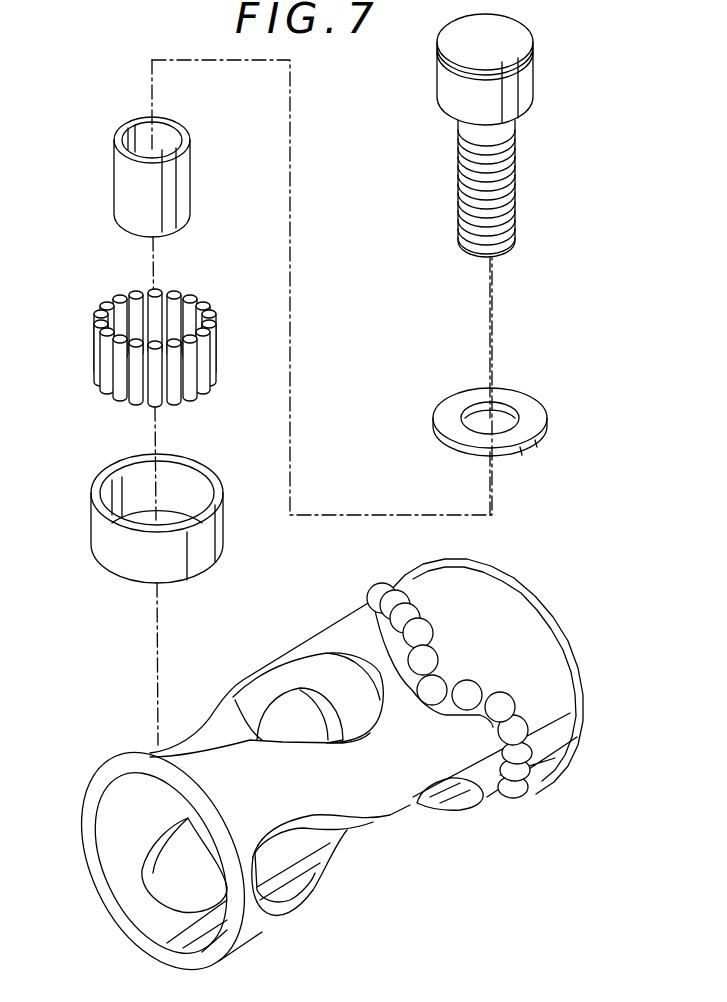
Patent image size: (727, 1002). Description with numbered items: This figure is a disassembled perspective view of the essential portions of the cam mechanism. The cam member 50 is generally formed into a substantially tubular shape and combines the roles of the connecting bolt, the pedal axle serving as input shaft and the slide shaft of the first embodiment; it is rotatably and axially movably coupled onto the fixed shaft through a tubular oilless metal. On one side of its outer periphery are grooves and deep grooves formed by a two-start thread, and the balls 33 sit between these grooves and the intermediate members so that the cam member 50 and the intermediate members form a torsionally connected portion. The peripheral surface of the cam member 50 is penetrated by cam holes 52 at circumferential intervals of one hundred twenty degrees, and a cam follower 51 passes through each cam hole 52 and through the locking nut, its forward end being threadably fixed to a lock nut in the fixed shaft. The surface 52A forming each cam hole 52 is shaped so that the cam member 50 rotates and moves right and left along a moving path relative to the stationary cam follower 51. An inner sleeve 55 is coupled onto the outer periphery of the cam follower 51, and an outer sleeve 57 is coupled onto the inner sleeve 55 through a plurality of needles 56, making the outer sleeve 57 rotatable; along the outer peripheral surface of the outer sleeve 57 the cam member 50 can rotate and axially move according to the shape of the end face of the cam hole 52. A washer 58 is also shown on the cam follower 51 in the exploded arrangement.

The cam member 50 is at (537, 618).
The cam follower 51 is at (523, 98).
The cam hole 52 is at (250, 697).
The surface forming the cam hole 52A is at (303, 663).
The inner sleeve 55 is at (123, 177).
The needles 56 is at (112, 368).
The outer sleeve 57 is at (100, 525).
The washer 58 is at (530, 402).
The balls 33 is at (393, 600).